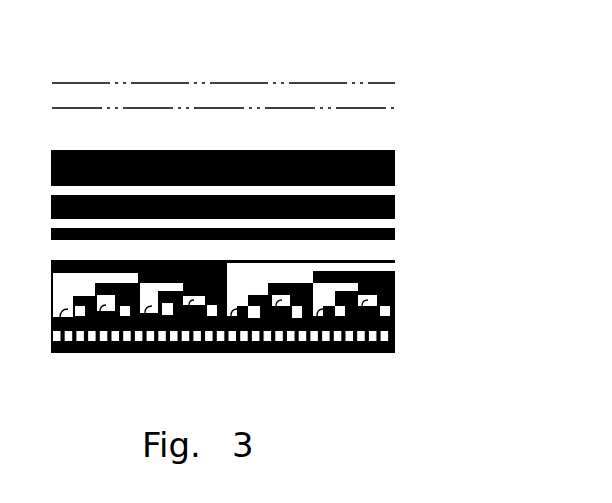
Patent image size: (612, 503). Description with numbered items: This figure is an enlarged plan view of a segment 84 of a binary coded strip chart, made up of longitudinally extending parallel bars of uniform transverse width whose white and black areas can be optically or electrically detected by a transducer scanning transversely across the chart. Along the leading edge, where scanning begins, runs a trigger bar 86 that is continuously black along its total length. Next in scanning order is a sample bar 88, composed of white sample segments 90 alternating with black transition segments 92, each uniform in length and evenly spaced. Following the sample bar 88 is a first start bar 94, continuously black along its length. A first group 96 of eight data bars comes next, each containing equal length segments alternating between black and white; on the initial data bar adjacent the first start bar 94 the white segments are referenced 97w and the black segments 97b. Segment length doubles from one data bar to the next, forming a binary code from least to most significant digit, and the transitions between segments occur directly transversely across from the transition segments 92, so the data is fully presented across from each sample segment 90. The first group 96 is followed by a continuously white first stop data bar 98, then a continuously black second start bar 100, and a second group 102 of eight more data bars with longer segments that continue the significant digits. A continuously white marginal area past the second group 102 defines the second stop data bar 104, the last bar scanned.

The segment 84 is at (392, 78).
The second stop data bar 104 is at (395, 84).
The second group of data bars 102 is at (403, 109).
The second start bar 100 is at (395, 207).
The first stop data bar 98 is at (398, 229).
The first group of data bars 96 is at (265, 310).
The black segment 97b is at (103, 353).
The white segment 97w is at (190, 353).
The transition segment 92 is at (275, 353).
The sample segment 90 is at (350, 353).
The first start bar 94 is at (397, 323).
The sample bar 88 is at (397, 335).
The trigger bar 86 is at (393, 348).